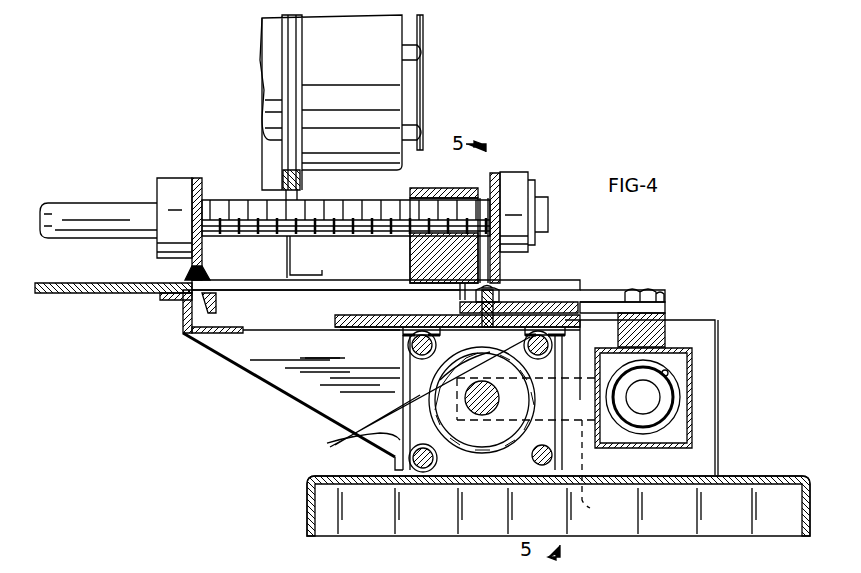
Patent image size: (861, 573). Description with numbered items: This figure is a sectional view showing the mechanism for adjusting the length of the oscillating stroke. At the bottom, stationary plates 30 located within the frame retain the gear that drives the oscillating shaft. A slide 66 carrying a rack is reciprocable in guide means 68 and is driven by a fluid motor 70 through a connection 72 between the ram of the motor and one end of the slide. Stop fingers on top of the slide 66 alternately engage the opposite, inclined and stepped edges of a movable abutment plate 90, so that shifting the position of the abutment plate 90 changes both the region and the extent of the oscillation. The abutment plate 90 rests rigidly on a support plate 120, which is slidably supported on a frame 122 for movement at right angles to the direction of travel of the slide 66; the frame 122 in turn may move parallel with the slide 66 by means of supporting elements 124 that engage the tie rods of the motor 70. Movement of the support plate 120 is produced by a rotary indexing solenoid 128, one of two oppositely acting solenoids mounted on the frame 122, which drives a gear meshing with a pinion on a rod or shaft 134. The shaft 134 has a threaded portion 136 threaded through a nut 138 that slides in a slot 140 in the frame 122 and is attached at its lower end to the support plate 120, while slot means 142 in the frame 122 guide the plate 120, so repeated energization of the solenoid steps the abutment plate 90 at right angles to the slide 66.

The rotary indexing solenoid 128 is at (360, 52).
The rod or shaft 134 is at (122, 216).
The threaded portion 136 is at (322, 200).
The nut 138 is at (440, 188).
The slot 140 is at (378, 280).
The frame 122 is at (300, 330).
The slot means 142 is at (375, 330).
The supporting elements 124 is at (417, 403).
The support plate 120 is at (560, 300).
The abutment plate 90 is at (527, 300).
The fluid motor 70 is at (470, 432).
The guide means 68 is at (700, 372).
The slide 66 is at (690, 418).
The connection 72 is at (599, 468).
The stationary plates 30 is at (733, 476).